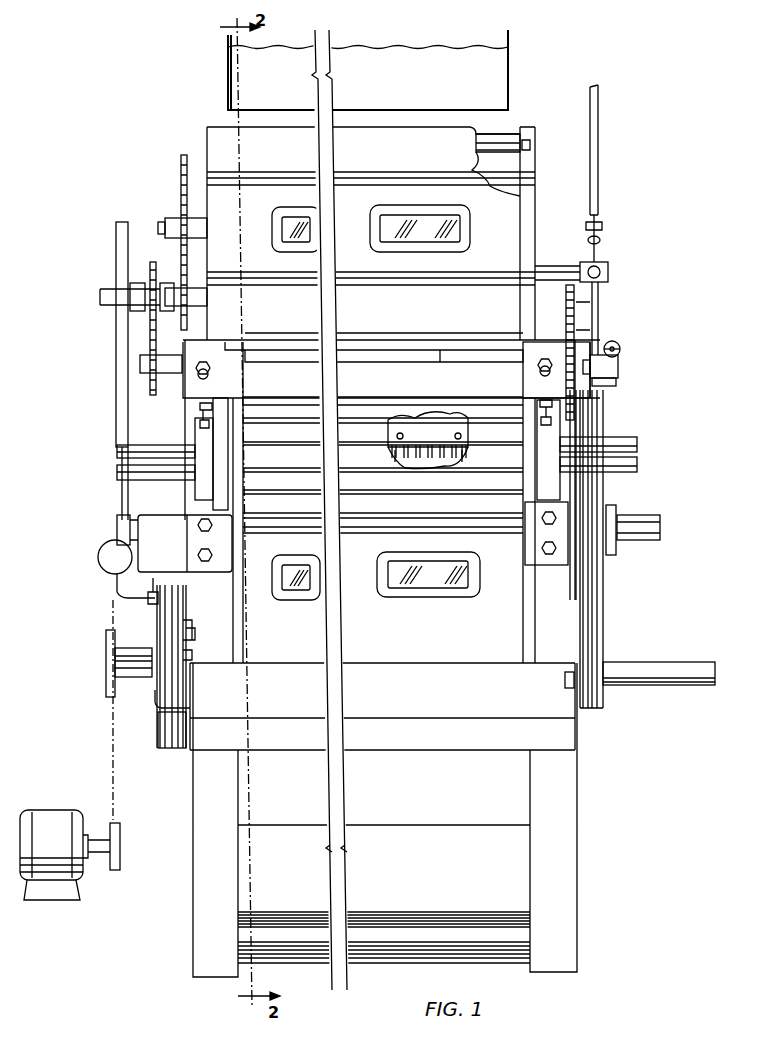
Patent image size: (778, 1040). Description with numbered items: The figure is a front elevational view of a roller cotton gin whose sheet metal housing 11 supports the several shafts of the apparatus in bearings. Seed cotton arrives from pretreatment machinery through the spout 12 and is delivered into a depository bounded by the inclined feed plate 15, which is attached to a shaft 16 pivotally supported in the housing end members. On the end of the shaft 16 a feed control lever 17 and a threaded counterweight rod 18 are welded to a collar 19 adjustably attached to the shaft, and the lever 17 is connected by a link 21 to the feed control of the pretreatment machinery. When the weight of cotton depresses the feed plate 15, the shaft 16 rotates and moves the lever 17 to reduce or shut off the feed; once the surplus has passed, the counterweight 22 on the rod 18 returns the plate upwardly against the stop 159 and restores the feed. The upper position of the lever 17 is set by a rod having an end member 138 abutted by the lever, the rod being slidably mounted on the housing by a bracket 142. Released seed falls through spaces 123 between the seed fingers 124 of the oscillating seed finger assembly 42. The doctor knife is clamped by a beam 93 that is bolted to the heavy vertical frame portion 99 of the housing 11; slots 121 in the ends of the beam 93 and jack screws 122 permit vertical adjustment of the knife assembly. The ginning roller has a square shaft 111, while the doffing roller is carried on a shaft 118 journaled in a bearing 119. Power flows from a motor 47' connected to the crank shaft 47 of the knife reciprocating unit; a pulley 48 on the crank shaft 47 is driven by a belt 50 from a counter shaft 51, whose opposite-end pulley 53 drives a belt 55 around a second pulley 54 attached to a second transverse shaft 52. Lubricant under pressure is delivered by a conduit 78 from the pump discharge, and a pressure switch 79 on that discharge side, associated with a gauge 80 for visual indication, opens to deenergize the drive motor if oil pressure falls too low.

The sheet metal housing 11 is at (207, 142).
The spout 12 is at (509, 84).
The stop 159 is at (495, 134).
The feed plate 15 is at (500, 168).
The link 21 is at (598, 160).
The end member 138 is at (603, 262).
The bracket 142 is at (608, 272).
The feed control lever 17 is at (590, 322).
The counterweight 22 is at (618, 344).
The threaded counterweight rod 18 is at (620, 352).
The shaft 16 is at (619, 366).
The collar 19 is at (617, 384).
The vertical frame portion 99 is at (215, 340).
The beam 93 is at (260, 350).
The slots 121 is at (198, 378).
The jack screws 122 is at (198, 410).
The square shaft 111 is at (117, 450).
The shaft 118 is at (117, 470).
The bearing 119 is at (228, 488).
The seed finger assembly 42 is at (462, 440).
The spaces 123 is at (398, 460).
The seed fingers 124 is at (460, 460).
The pressure switch 79 is at (138, 518).
The second shaft 52 is at (118, 532).
The gauge 80 is at (102, 567).
The belt 55 is at (594, 610).
The second pulley 54 is at (605, 636).
The counter shaft 51 is at (715, 664).
The pulley 53 is at (606, 708).
The belt 50 is at (172, 626).
The crank shaft 47 is at (109, 710).
The conduit 78 is at (155, 708).
The pulley 48 is at (158, 745).
The motor 47' is at (70, 833).